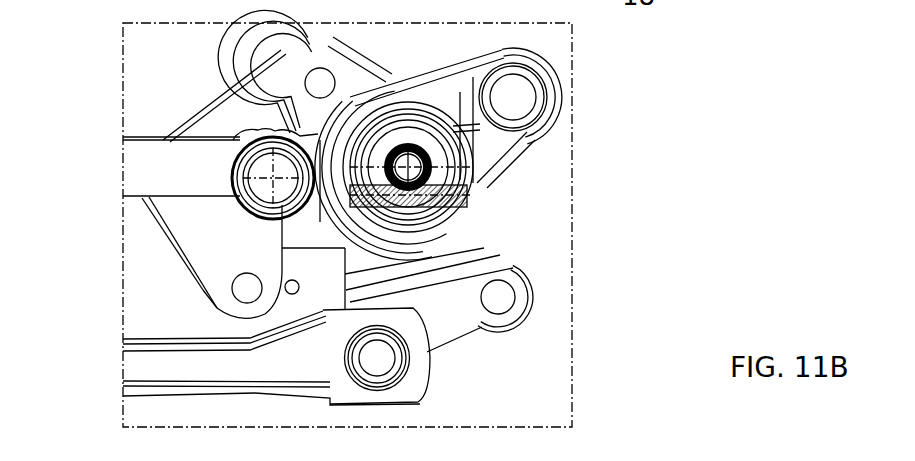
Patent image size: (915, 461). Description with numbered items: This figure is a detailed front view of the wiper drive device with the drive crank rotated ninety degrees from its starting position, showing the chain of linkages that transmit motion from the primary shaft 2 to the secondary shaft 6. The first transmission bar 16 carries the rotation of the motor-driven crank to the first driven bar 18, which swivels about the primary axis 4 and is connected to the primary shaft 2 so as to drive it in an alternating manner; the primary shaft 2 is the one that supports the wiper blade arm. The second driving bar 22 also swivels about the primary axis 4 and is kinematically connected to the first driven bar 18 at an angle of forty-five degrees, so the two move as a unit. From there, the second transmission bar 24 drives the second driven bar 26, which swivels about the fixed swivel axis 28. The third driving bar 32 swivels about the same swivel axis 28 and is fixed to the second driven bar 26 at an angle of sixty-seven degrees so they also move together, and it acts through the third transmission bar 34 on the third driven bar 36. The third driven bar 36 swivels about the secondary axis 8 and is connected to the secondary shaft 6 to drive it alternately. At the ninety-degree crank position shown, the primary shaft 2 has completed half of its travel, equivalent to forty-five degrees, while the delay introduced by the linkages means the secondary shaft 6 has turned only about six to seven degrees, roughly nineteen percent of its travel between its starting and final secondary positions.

The primary shaft 2 is at (430, 160).
The primary axis 4 is at (432, 174).
The secondary shaft 6 is at (425, 237).
The secondary axis 8 is at (397, 188).
The first transmission bar 16 is at (425, 390).
The first driven bar 18 is at (378, 298).
The second driving bar 22 is at (480, 270).
The second transmission bar 24 is at (285, 310).
The second driven bar 26 is at (262, 232).
The swivel axis 28 is at (272, 178).
The third driving bar 32 is at (250, 136).
The third transmission bar 34 is at (223, 123).
The third driven bar 36 is at (293, 68).